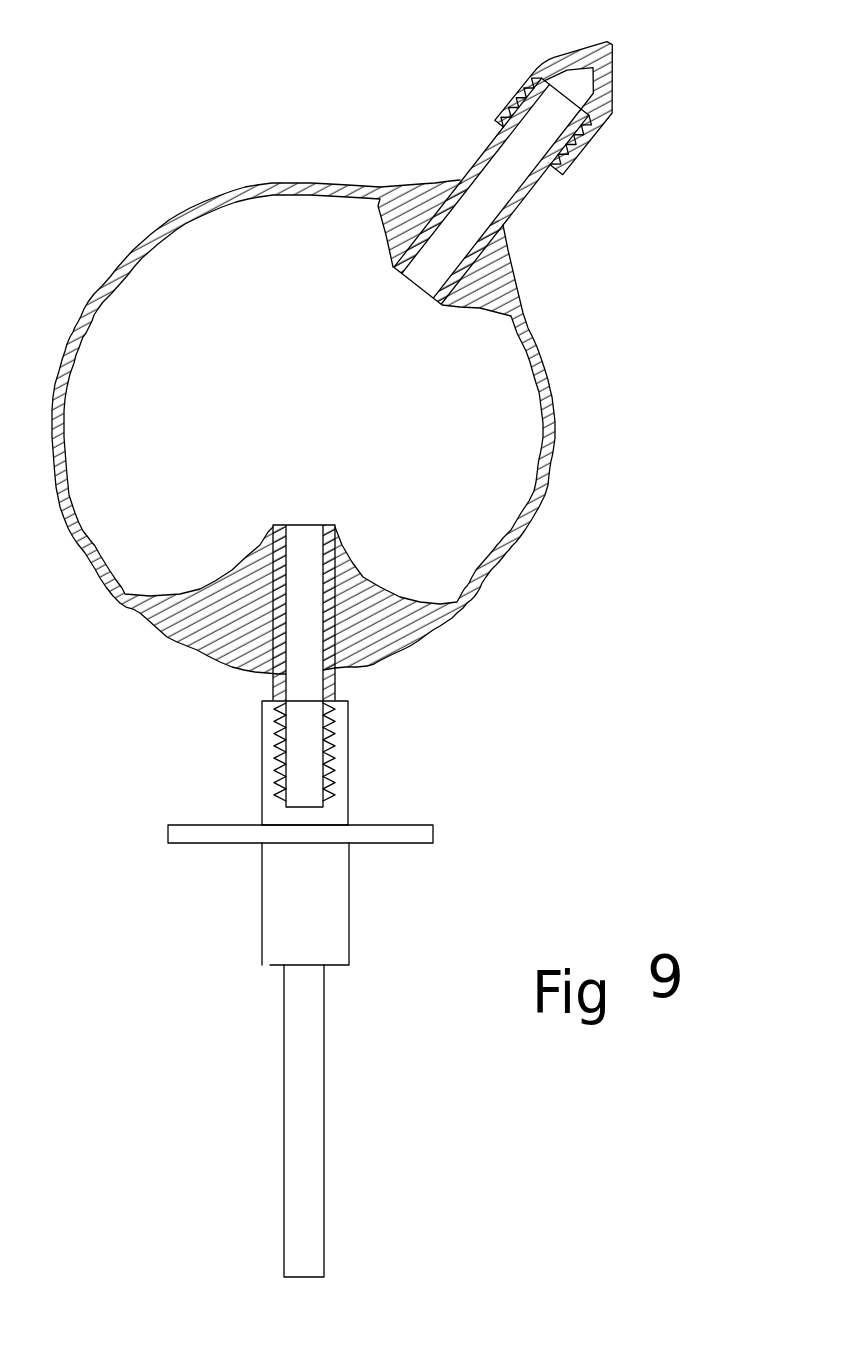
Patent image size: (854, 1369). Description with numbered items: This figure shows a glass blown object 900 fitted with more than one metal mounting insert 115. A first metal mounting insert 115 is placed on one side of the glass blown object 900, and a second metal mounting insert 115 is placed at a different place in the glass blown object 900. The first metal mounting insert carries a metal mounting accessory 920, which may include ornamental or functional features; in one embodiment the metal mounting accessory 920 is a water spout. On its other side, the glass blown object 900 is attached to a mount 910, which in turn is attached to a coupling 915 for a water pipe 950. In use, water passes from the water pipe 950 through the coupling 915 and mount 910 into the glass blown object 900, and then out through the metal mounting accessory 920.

The glass blown object 900 is at (592, 392).
The metal mounting accessory 920 is at (612, 102).
The metal mounting insert 115 is at (518, 198).
The mount 910 is at (332, 815).
The coupling 915 is at (338, 880).
The water pipe 950 is at (312, 1035).